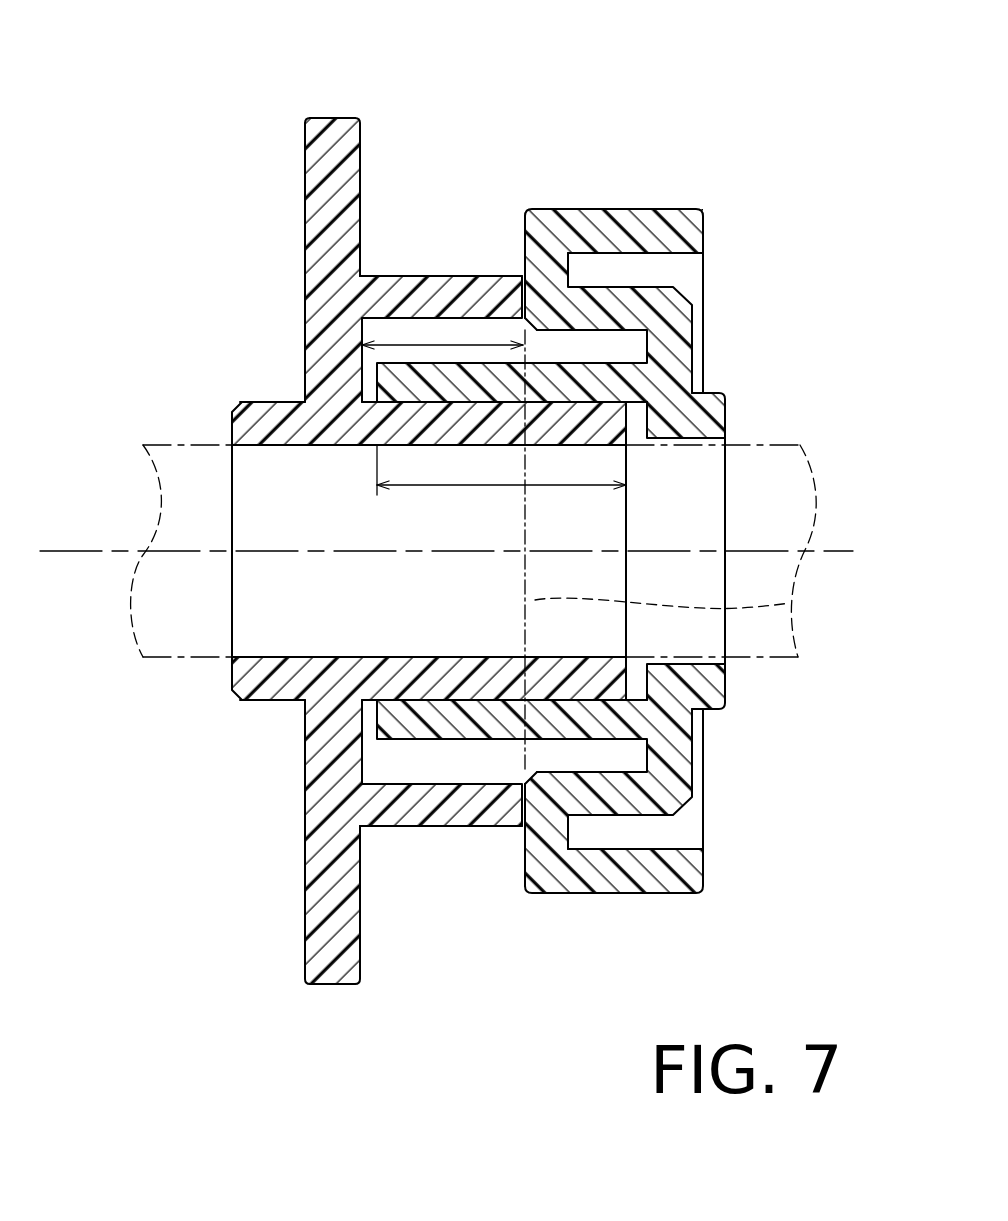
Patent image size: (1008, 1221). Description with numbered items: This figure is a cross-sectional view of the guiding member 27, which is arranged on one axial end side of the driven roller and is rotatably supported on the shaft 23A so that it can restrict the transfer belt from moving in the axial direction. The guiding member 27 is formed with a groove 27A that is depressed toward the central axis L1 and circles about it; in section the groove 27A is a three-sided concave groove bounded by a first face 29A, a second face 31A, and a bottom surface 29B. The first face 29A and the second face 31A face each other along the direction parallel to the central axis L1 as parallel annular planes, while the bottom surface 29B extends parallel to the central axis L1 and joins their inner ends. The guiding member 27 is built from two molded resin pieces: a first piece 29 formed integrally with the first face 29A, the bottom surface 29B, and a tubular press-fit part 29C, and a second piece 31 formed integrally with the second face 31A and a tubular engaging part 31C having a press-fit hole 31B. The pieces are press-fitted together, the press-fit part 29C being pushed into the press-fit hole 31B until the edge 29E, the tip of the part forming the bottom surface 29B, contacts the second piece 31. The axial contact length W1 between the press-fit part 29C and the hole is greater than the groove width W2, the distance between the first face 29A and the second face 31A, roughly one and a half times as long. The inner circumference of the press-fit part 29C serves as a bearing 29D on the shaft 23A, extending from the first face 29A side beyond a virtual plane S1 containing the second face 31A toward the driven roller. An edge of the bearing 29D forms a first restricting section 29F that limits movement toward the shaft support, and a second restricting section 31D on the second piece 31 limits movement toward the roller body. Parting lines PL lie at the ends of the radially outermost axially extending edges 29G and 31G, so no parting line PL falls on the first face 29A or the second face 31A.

The first piece 29 is at (301, 209).
The first face 29A is at (362, 165).
The bottom surface 29B is at (408, 275).
The press-fit part 29C is at (448, 420).
The bearing 29D is at (300, 447).
The edge 29E is at (518, 292).
The first restricting section 29F is at (233, 430).
The axially extending edge 29G is at (338, 118).
The guiding member 27 is at (693, 176).
The groove 27A is at (440, 233).
The second piece 31 is at (706, 224).
The second face 31A is at (524, 242).
The press-fit hole 31B is at (667, 420).
The engaging part 31C is at (591, 380).
The second restricting section 31D is at (727, 405).
The axially extending edge 31G is at (612, 208).
The shaft 23A is at (782, 445).
The parting line PL is at (314, 118).
The central axis L1 is at (63, 548).
The virtual plane S1 is at (790, 603).
The length W1 is at (501, 470).
The width W2 is at (442, 335).